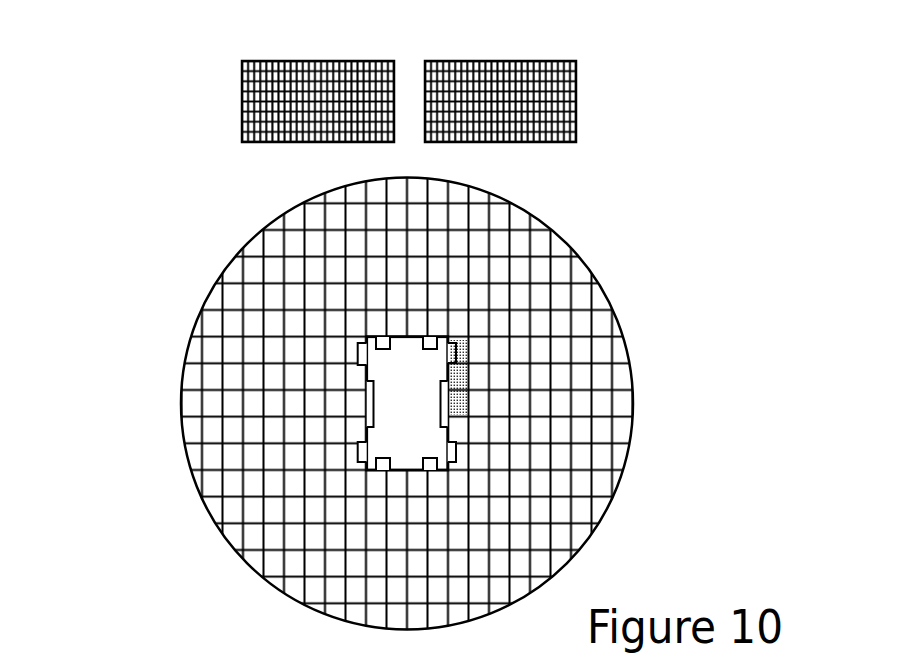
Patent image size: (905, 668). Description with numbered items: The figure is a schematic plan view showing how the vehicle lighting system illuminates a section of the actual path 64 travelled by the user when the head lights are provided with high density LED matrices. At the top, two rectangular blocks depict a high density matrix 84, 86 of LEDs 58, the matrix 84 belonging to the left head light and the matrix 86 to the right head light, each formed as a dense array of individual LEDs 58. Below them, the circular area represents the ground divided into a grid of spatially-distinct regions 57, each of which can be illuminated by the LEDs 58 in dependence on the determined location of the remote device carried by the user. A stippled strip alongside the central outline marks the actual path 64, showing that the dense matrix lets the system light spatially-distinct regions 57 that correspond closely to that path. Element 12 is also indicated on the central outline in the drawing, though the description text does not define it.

The semiconductor die / device region 12 is at (316, 367).
The spatially-distinct regions 57 is at (558, 273).
The LEDs 58 is at (409, 85).
The actual path 64 is at (466, 376).
The high density matrix 84 is at (242, 118).
The high density matrix 86 is at (576, 120).